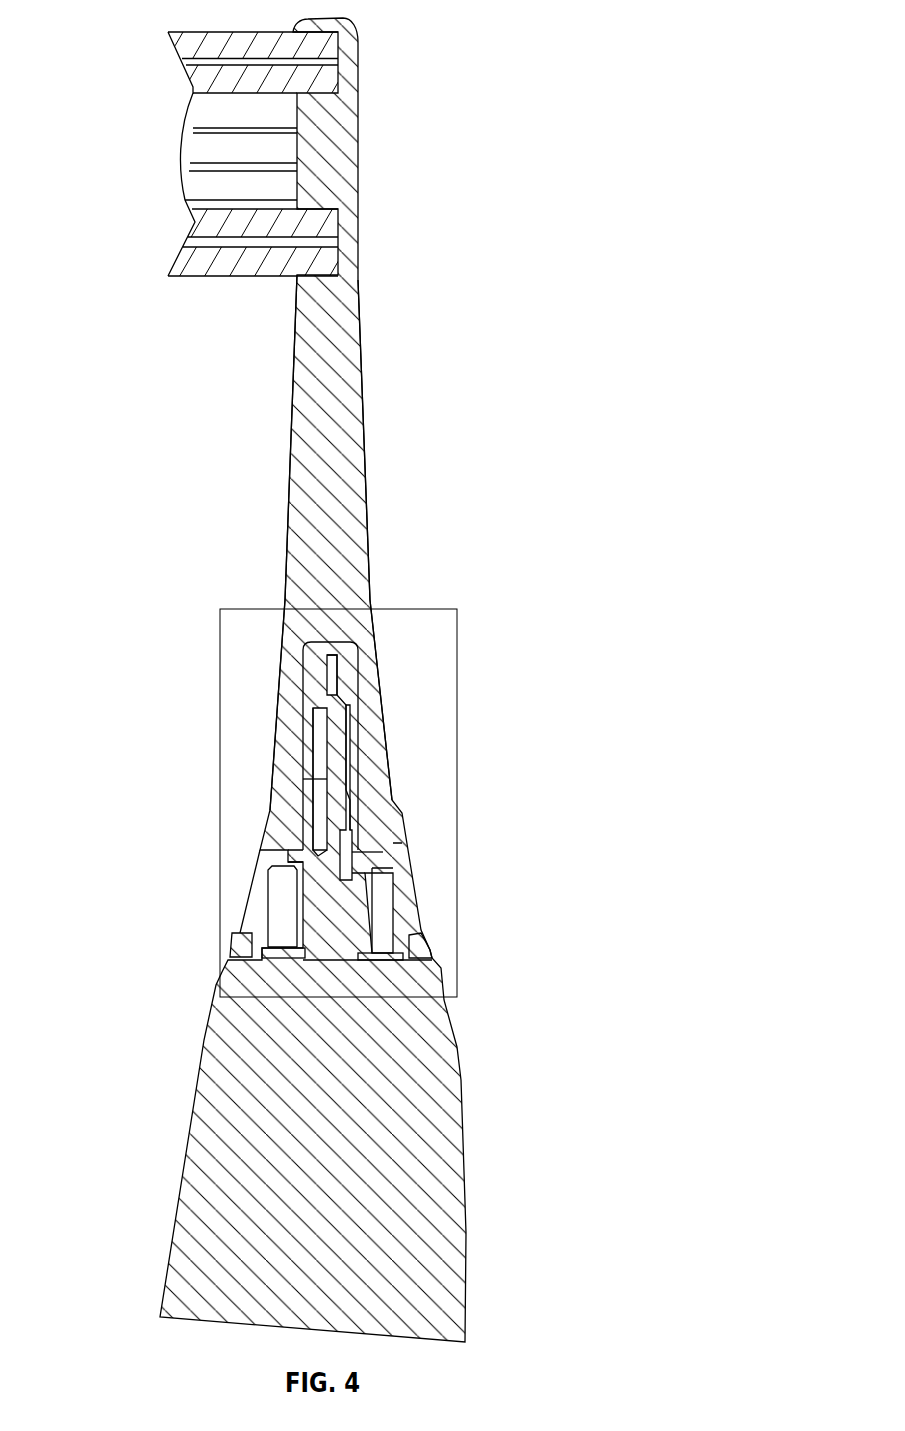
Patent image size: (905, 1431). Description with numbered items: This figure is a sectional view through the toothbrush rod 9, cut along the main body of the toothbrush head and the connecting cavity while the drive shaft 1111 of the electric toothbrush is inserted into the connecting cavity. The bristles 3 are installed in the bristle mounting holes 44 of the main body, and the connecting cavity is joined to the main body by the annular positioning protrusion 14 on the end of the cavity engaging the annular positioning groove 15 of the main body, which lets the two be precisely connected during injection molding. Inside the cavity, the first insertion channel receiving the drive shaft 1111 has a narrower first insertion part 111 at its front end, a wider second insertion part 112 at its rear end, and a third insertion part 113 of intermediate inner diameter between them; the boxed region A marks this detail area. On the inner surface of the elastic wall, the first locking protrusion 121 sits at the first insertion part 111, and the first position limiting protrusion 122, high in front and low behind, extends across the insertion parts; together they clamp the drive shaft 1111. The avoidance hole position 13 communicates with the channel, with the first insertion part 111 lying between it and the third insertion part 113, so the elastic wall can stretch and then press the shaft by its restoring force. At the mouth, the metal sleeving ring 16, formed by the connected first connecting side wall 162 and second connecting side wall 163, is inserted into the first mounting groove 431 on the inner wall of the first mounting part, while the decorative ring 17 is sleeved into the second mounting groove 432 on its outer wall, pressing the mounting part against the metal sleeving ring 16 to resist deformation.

The bristles 3 is at (228, 276).
The toothbrush rod 9 is at (285, 407).
The bristle mounting holes 44 is at (360, 323).
The avoidance hole position 13 is at (328, 677).
The first insertion part 111 is at (358, 714).
The drive shaft 1111 is at (350, 750).
The first locking protrusion 121 is at (350, 740).
The first position limiting protrusion 122 is at (300, 785).
The third insertion part 113 is at (355, 817).
The second insertion part 112 is at (403, 862).
The annular positioning groove 15 is at (293, 847).
The annular positioning protrusion 14 is at (290, 863).
The first connecting side wall 162 is at (276, 925).
The metal sleeving ring 16 is at (268, 940).
The first mounting groove 431 is at (232, 945).
The second connecting side wall 163 is at (230, 973).
The second mounting groove 432 is at (432, 935).
The decorative ring 17 is at (432, 952).
The enlarged detail region A is at (465, 890).